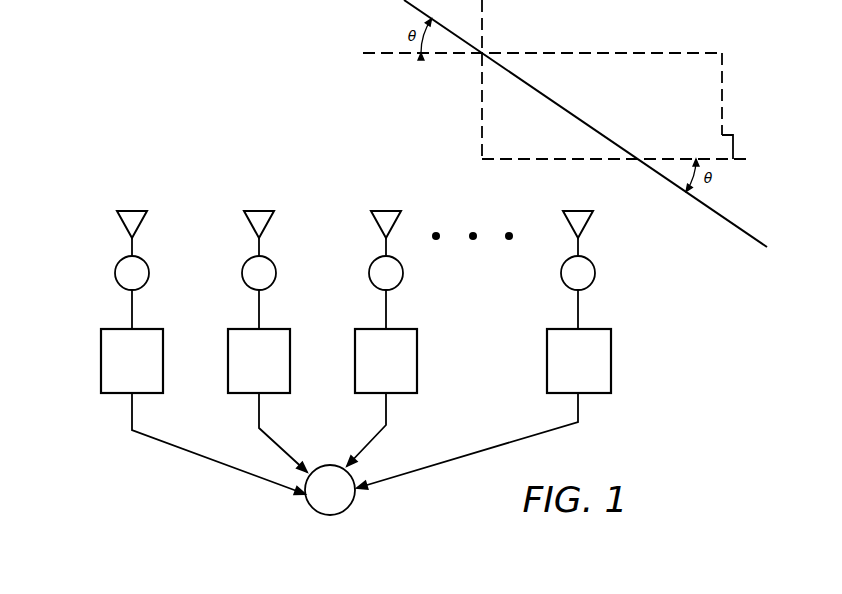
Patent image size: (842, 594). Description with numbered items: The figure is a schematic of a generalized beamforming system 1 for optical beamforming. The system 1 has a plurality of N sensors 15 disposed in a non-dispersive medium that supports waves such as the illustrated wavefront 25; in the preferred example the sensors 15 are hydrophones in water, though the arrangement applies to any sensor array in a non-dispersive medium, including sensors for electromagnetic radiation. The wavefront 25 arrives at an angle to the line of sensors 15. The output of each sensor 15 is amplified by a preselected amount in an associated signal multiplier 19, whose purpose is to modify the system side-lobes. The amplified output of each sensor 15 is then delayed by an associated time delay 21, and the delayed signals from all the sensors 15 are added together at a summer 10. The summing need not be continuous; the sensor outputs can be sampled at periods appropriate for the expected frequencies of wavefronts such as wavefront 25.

The beamforming system 1 is at (78, 108).
The summer 10 is at (318, 515).
The sensor 15 is at (130, 210).
The signal multiplier 19 is at (115, 273).
The time delay 21 is at (101, 375).
The wavefront 25 is at (748, 232).